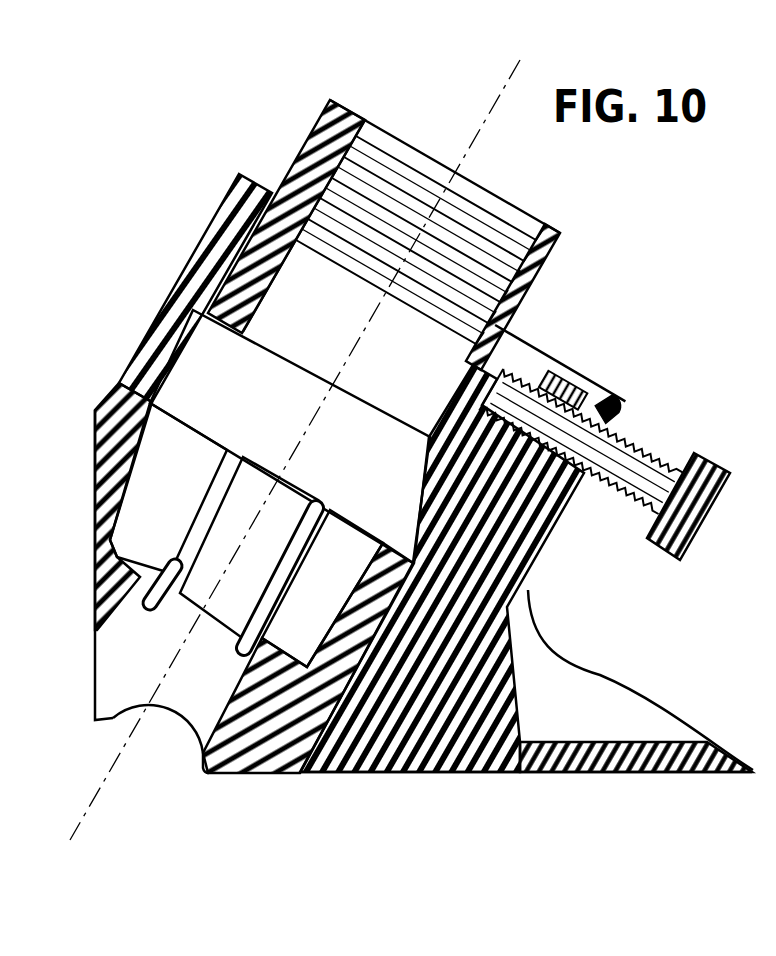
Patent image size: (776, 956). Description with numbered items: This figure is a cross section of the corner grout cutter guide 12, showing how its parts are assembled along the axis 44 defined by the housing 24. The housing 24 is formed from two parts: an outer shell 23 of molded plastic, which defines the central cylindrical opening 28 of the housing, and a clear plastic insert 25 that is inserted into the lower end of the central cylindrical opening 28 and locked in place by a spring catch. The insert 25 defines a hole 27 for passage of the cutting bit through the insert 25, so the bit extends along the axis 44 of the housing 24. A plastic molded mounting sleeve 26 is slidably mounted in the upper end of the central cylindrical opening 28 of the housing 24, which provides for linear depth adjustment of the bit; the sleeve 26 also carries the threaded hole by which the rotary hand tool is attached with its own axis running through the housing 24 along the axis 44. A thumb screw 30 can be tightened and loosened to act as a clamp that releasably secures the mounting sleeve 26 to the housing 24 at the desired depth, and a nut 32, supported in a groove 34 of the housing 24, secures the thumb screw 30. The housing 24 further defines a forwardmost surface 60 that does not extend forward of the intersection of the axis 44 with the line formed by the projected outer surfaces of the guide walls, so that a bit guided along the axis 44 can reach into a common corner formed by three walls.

The corner cutting guide 12 is at (598, 293).
The outer shell 23 is at (417, 768).
The housing 24 is at (493, 572).
The insert 25 is at (205, 746).
The mounting sleeve 26 is at (330, 142).
The hole 27 is at (131, 655).
The central cylindrical opening 28 is at (198, 383).
The thumb screw 30 is at (694, 453).
The nut 32 is at (560, 372).
The groove 34 is at (515, 526).
The axis 44 is at (278, 484).
The forwardmost surface 60 is at (95, 441).